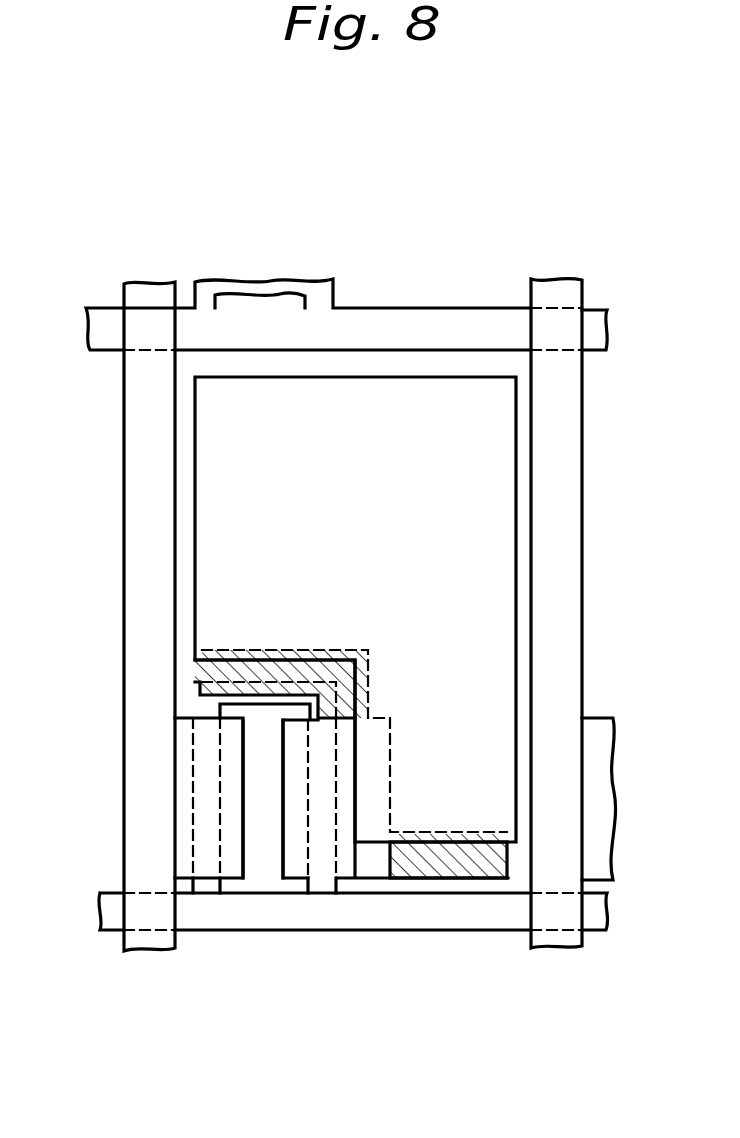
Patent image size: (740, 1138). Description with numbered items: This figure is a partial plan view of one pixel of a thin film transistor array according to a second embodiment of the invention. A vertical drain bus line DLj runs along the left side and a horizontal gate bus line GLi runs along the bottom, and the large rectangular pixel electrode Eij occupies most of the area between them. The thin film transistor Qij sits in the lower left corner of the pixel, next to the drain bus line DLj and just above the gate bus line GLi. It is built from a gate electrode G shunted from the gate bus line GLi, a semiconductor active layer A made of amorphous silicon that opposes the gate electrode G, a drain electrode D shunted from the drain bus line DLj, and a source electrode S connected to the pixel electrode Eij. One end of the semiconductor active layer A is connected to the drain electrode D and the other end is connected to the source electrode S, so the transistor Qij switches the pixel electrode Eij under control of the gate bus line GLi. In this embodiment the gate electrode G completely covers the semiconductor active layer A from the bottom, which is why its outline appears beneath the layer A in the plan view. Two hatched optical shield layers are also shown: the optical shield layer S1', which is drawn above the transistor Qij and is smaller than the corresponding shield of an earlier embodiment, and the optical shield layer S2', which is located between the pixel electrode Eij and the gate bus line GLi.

The drain bus line DLj is at (125, 703).
The gate bus line GLi is at (395, 931).
The pixel electrode Eij is at (355, 609).
The thin film transistor Qij is at (263, 799).
The optical shield layer S1' is at (228, 655).
The optical shield layer S2' is at (448, 851).
The drain electrode D is at (206, 880).
The source electrode S is at (322, 880).
The gate electrode G is at (193, 828).
The semiconductor active layer A is at (220, 763).